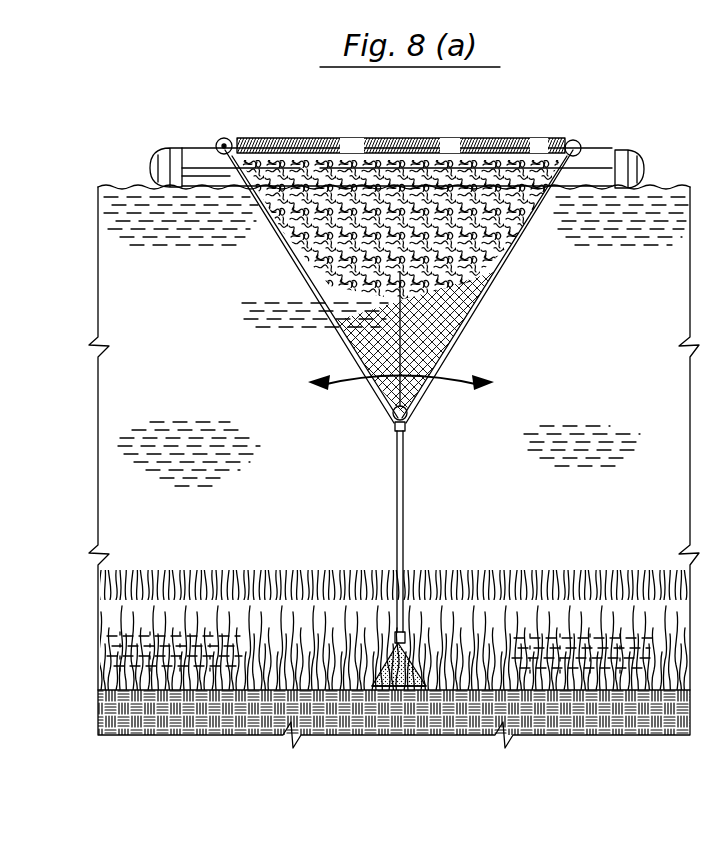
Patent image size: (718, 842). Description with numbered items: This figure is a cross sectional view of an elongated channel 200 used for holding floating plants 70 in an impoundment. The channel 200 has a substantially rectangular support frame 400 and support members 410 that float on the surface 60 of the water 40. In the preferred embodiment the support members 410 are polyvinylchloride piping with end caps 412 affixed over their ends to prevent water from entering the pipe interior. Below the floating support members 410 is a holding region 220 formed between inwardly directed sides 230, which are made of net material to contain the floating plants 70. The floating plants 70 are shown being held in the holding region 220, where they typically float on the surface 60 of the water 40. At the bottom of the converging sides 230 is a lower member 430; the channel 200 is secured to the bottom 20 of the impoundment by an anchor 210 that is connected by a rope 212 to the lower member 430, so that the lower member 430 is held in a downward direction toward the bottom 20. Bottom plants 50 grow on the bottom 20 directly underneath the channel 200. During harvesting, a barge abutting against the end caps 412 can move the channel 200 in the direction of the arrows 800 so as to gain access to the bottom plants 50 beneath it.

The bottom 20 is at (564, 716).
The water 40 is at (215, 369).
The bottom plants 50 is at (239, 596).
The surface 60 is at (666, 184).
The floating plants 70 is at (455, 185).
The channel 200 is at (348, 128).
The anchor 210 is at (409, 625).
The rope 212 is at (397, 477).
The holding region 220 is at (327, 289).
The inwardly directed sides 230 is at (490, 312).
The support frame 400 is at (220, 140).
The support members 410 is at (595, 163).
The end caps 412 is at (638, 165).
The lower member 430 is at (411, 426).
The arrows 800 is at (448, 387).